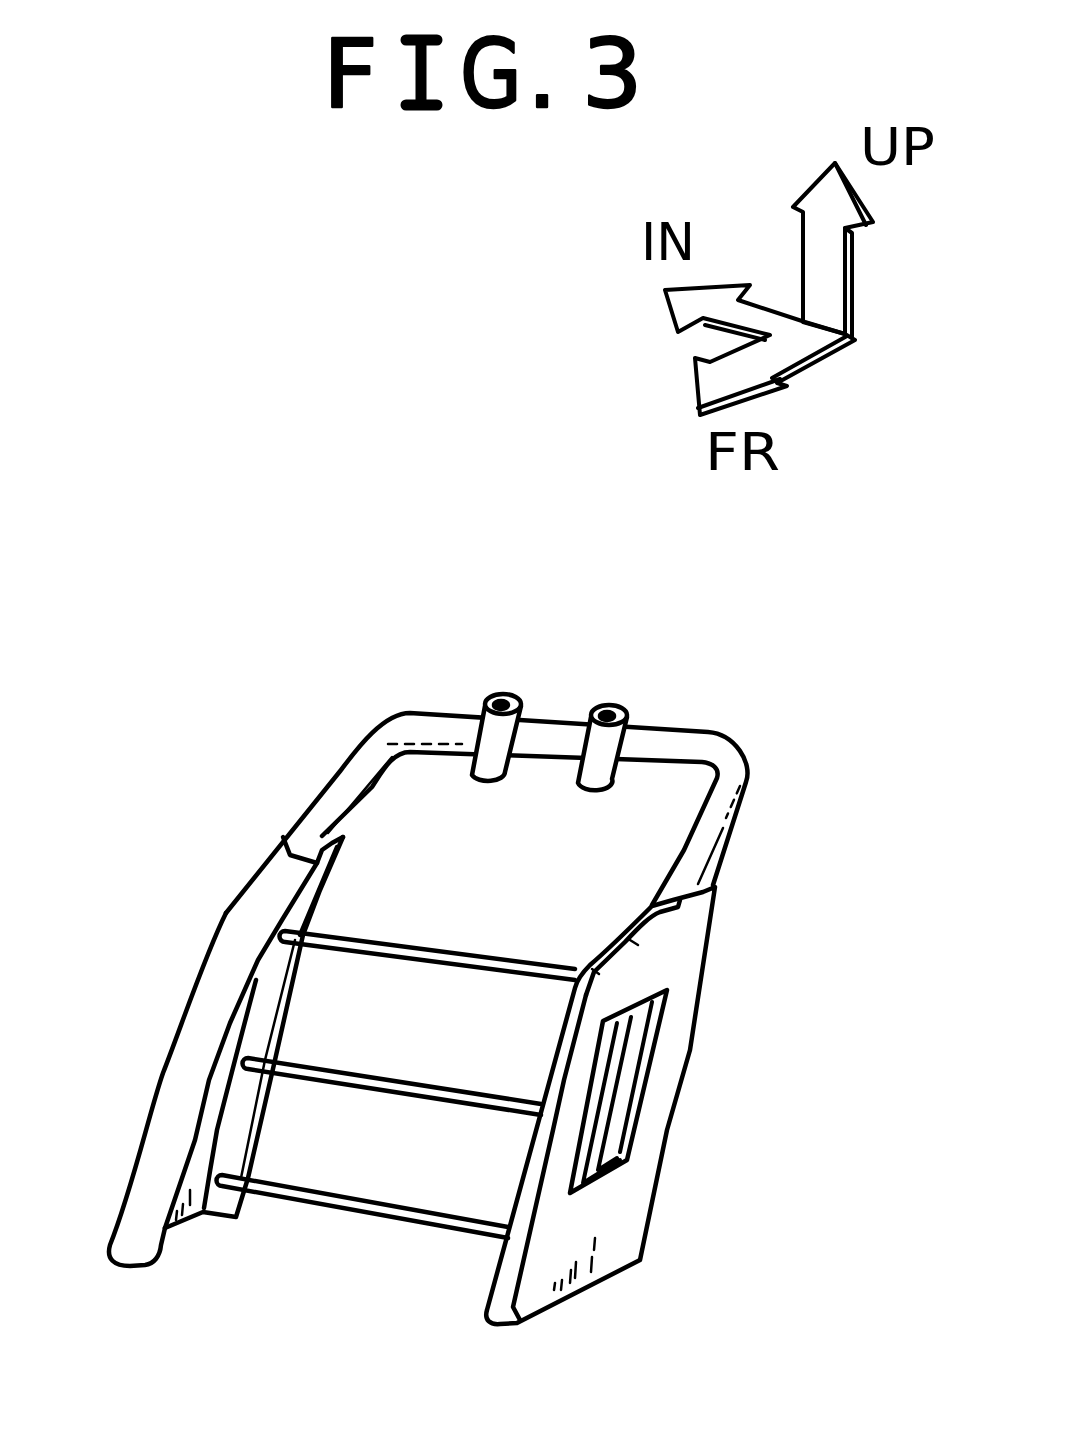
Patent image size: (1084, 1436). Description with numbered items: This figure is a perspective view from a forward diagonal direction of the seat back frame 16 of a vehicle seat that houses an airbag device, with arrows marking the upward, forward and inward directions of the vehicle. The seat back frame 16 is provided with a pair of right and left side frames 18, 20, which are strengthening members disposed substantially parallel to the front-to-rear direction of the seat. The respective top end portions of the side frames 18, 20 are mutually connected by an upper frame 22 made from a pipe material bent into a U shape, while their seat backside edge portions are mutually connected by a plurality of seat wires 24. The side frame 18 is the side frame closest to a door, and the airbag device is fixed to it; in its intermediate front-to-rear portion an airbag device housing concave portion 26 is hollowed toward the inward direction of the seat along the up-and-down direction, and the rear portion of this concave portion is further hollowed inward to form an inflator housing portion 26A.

The seat back frame 16 is at (767, 782).
The side frame 18 is at (674, 1089).
The side frame 20 is at (225, 918).
The upper frame 22 is at (557, 740).
The seat wires 24 is at (464, 947).
The airbag device housing concave portion 26 is at (618, 1138).
The inflator housing portion 26A is at (626, 1057).